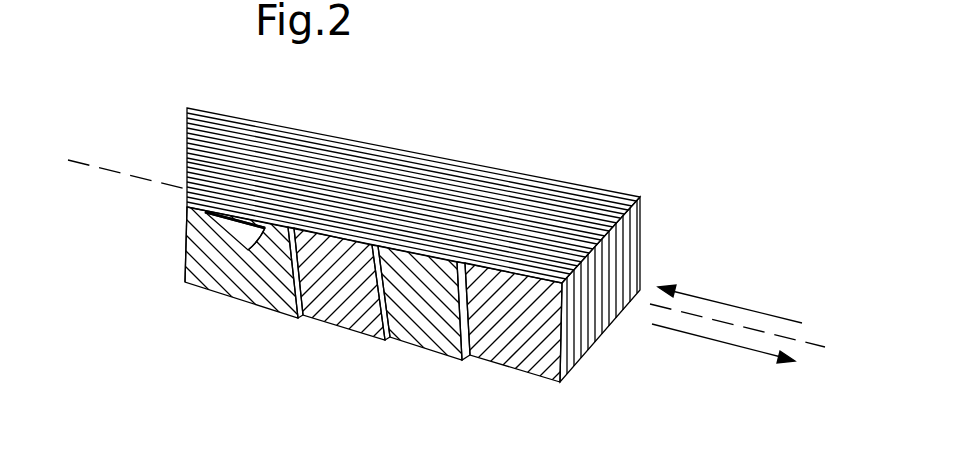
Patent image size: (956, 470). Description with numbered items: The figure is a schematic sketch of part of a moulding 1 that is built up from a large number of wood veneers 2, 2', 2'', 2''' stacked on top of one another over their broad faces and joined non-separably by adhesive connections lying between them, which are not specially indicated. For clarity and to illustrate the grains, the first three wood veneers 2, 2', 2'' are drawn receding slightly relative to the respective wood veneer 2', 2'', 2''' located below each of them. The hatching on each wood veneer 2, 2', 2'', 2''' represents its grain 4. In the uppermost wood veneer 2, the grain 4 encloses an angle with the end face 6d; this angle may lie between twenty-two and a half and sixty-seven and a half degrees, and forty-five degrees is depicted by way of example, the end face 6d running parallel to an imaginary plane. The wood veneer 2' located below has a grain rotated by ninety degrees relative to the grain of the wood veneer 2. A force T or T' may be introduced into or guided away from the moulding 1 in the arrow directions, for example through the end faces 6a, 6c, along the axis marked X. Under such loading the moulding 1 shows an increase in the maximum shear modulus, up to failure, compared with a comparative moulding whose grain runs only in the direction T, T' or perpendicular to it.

The moulding 1 is at (437, 193).
The wood veneer 2 is at (241, 258).
The wood veneer 2' is at (339, 282).
The wood veneer 2'' is at (420, 296).
The wood veneer 2''' is at (513, 308).
The grain 4 is at (215, 256).
The end face 6a is at (168, 217).
The end face 6c is at (610, 260).
The end face 6d is at (227, 215).
The force T is at (730, 297).
The force T' is at (723, 353).
The axis X is at (459, 265).